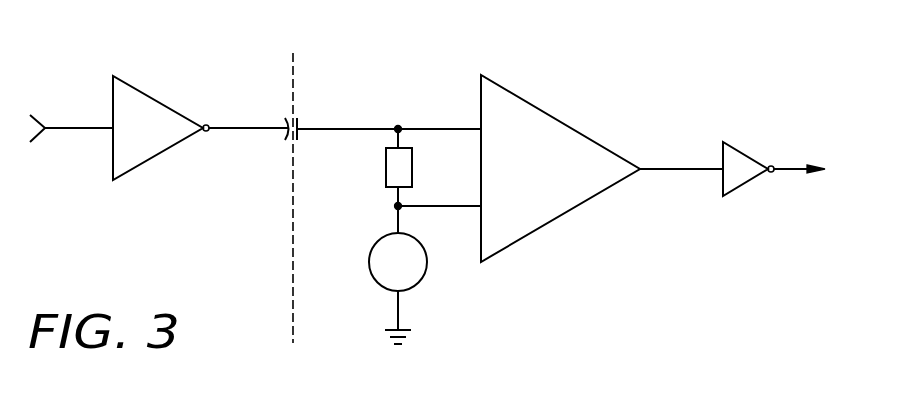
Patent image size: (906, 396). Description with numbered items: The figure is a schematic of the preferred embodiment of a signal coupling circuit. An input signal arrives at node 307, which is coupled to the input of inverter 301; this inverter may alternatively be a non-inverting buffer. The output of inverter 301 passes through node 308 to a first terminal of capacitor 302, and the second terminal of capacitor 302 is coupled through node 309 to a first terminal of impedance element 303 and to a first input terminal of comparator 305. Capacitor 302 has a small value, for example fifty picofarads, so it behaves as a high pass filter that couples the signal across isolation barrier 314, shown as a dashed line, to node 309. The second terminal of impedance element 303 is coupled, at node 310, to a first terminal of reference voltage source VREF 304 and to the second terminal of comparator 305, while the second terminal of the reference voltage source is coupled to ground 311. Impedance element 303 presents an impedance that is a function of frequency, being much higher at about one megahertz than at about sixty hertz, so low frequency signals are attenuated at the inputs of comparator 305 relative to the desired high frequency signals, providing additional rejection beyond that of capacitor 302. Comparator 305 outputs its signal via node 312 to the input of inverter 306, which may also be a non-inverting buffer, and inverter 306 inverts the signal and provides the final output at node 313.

The inverter 301 is at (160, 103).
The capacitor 302 is at (300, 129).
The impedance element 303 is at (386, 163).
The reference voltage source VREF 304 is at (369, 262).
The comparator 305 is at (560, 118).
The inverter 306 is at (744, 150).
The node 307 is at (75, 128).
The node 308 is at (245, 130).
The node 309 is at (375, 129).
The node 310 is at (452, 206).
The ground 311 is at (400, 309).
The node 312 is at (676, 169).
The node 313 is at (793, 172).
The isolation barrier 314 is at (293, 288).